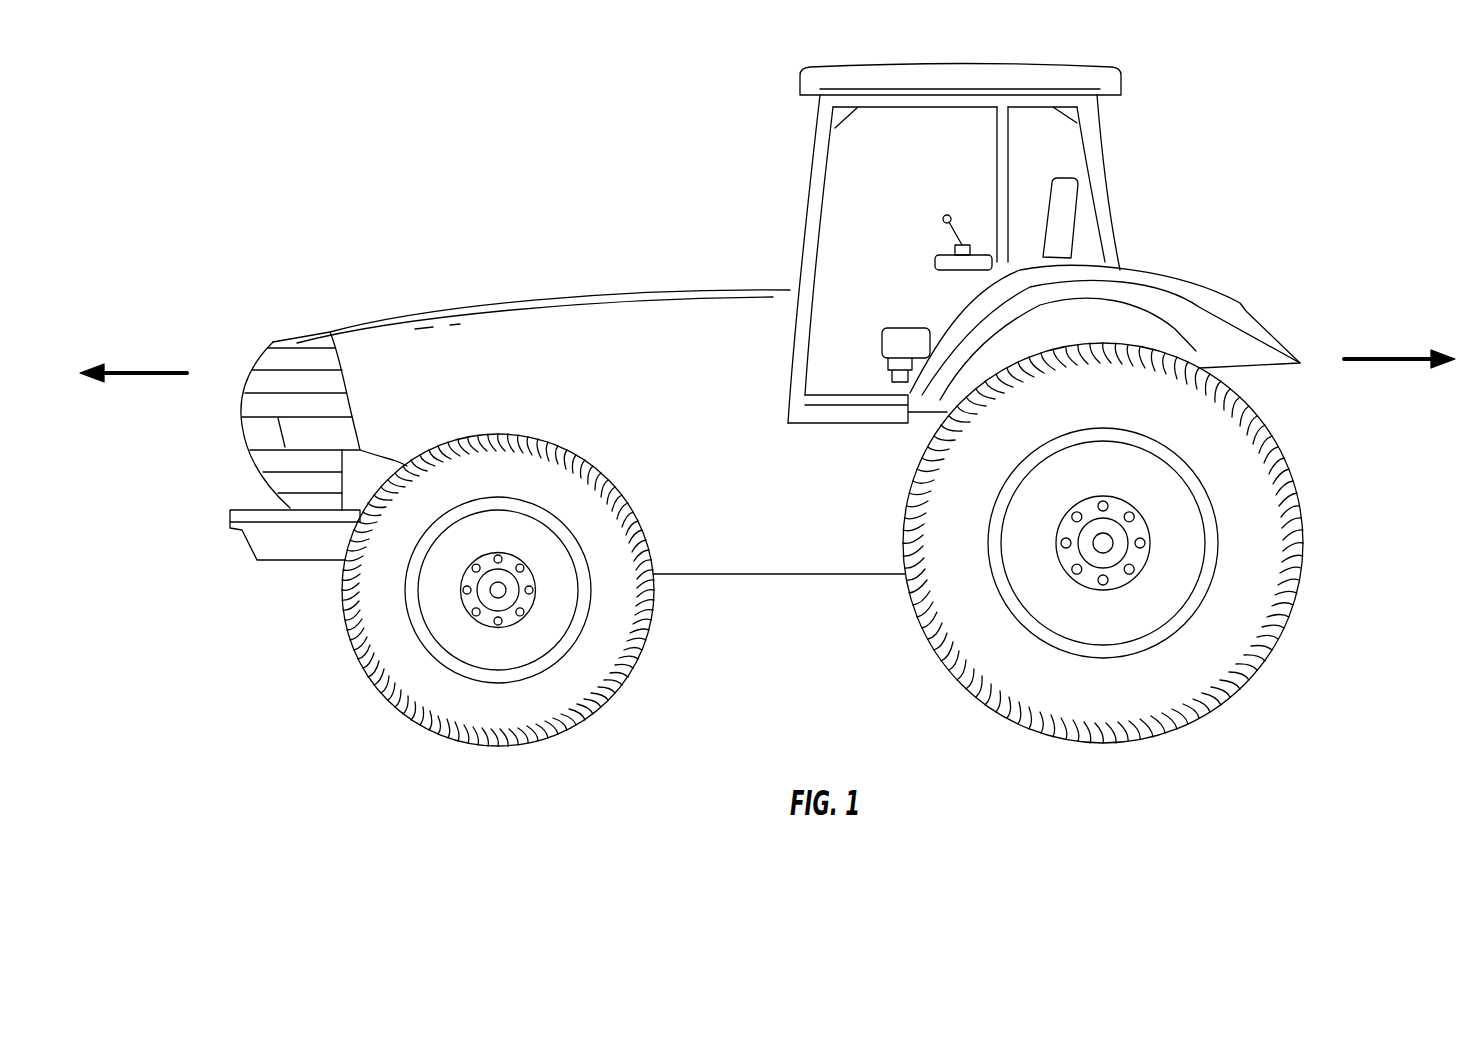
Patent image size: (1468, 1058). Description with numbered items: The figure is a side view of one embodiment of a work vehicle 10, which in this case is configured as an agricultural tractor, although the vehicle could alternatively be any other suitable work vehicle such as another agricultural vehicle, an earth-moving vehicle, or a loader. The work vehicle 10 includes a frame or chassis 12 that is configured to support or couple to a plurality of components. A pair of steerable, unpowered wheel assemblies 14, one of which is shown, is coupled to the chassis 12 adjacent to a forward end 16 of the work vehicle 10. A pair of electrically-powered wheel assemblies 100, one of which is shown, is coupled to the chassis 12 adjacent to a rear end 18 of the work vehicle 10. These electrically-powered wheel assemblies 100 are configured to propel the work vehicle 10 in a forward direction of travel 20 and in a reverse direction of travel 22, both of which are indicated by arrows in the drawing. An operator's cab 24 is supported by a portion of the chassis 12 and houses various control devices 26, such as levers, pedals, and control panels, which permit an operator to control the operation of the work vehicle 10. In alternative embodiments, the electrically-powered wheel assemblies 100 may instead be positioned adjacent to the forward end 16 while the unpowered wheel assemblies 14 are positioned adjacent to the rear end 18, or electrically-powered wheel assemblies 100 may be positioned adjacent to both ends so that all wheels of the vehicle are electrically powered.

The work vehicle 10 is at (428, 198).
The chassis 12 is at (720, 574).
The steerable, unpowered wheel assemblies 14 is at (340, 615).
The forward end 16 is at (203, 528).
The rear end 18 is at (1343, 640).
The forward direction of travel 20 is at (140, 373).
The reverse direction of travel 22 is at (1370, 359).
The operator's cab 24 is at (1113, 203).
The control devices 26 is at (945, 215).
The electrically-powered wheel assemblies 100 is at (1304, 569).